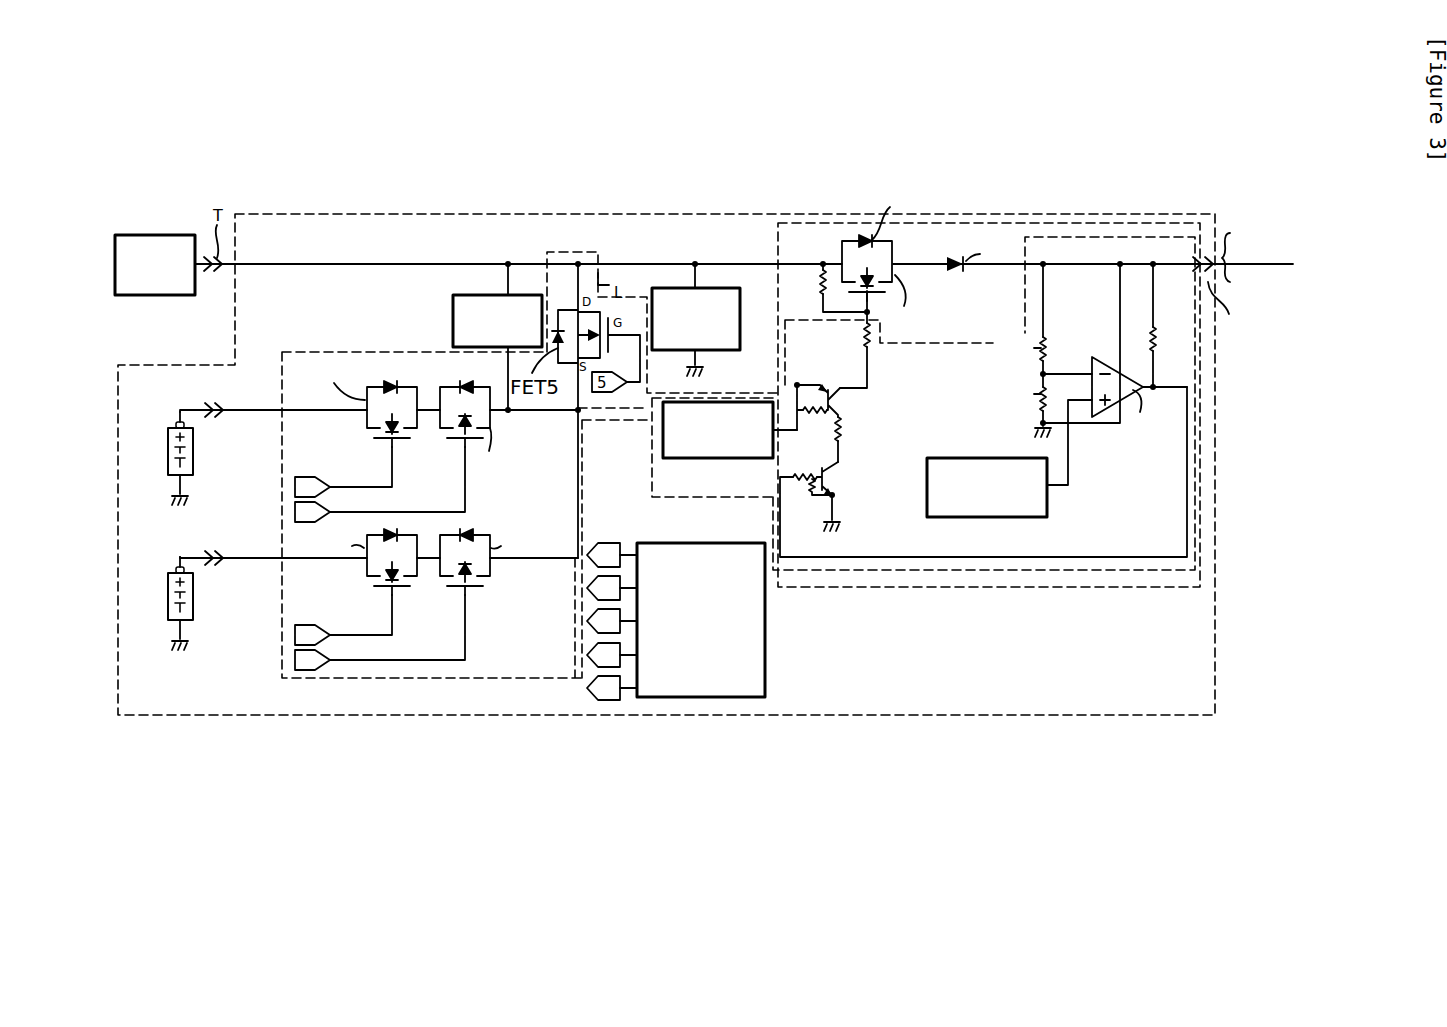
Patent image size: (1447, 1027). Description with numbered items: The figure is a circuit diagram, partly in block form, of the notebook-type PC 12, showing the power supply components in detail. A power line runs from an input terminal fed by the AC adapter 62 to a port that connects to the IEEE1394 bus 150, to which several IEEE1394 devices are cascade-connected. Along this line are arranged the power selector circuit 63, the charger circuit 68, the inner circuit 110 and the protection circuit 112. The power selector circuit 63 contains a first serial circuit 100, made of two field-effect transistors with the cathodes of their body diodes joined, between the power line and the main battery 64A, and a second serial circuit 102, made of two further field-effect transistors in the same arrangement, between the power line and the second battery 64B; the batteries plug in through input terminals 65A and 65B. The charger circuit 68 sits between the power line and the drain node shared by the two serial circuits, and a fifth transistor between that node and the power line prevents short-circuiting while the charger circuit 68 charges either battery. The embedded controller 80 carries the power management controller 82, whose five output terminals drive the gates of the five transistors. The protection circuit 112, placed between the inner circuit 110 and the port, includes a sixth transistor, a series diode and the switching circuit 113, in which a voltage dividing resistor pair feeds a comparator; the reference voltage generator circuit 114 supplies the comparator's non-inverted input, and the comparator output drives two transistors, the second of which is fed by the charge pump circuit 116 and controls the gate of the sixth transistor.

The PC 12 is at (984, 212).
The AC adapter 62 is at (162, 234).
The power selector circuit 63 is at (432, 496).
The main battery 64A is at (167, 434).
The second battery 64B is at (167, 579).
The input terminal 65A is at (213, 420).
The input terminal 65B is at (213, 570).
The charger circuit 68 is at (478, 294).
The embedded controller 80 is at (671, 554).
The power management controller (PMC) 82 is at (678, 543).
The first serial circuit 100 is at (415, 378).
The second serial circuit 102 is at (437, 527).
The inner circuit 110 is at (716, 352).
The protection circuit 112 is at (1025, 590).
The switching circuit 113 is at (1022, 310).
The reference voltage generator circuit 114 is at (985, 518).
The charge pump circuit 116 is at (703, 460).
The IEEE1394 bus 150 is at (1261, 269).